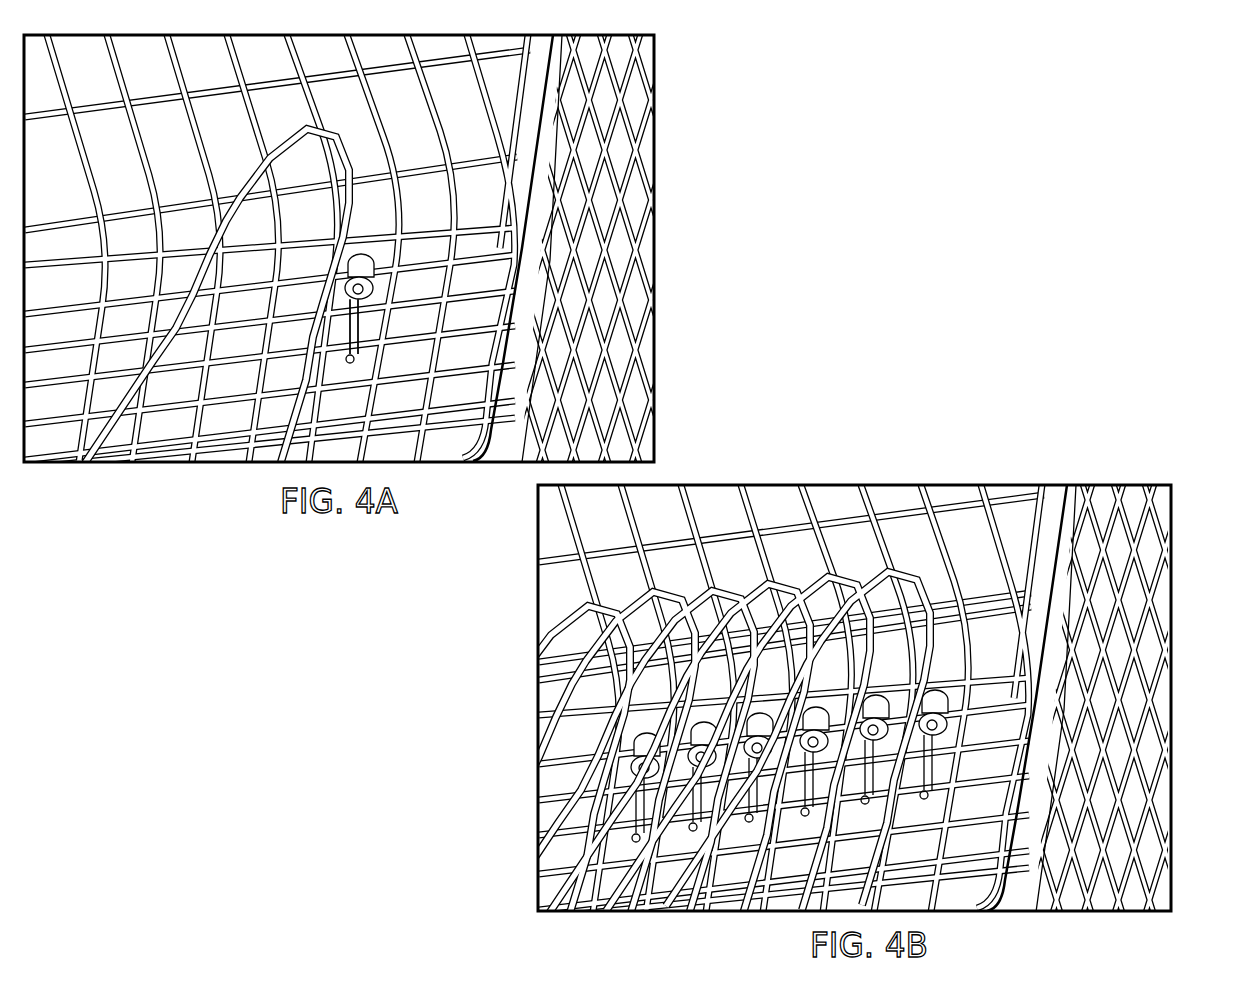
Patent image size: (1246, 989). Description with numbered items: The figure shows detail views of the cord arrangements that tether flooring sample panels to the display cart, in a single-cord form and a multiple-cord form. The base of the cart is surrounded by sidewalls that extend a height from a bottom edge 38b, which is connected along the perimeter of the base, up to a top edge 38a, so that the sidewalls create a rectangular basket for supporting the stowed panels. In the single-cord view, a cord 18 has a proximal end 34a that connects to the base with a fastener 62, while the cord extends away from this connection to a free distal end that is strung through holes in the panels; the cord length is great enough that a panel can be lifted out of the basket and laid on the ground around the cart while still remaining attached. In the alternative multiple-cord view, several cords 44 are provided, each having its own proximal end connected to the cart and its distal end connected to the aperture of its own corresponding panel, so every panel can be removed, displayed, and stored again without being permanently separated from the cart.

In FIG. 4A, the cord 18 is at (152, 352).
In FIG. 4A, the fastener 62 is at (370, 266).
In FIG. 4A, the proximal end 34a is at (358, 338).
In FIG. 4A, the top edge 38a is at (506, 388).
In FIG. 4B, the top edge 38a is at (1068, 550).
In FIG. 4A, the bottom edge 38b is at (622, 410).
In FIG. 4B, the bottom edge 38b is at (1150, 797).
In FIG. 4B, the multiple cords 44 is at (925, 597).